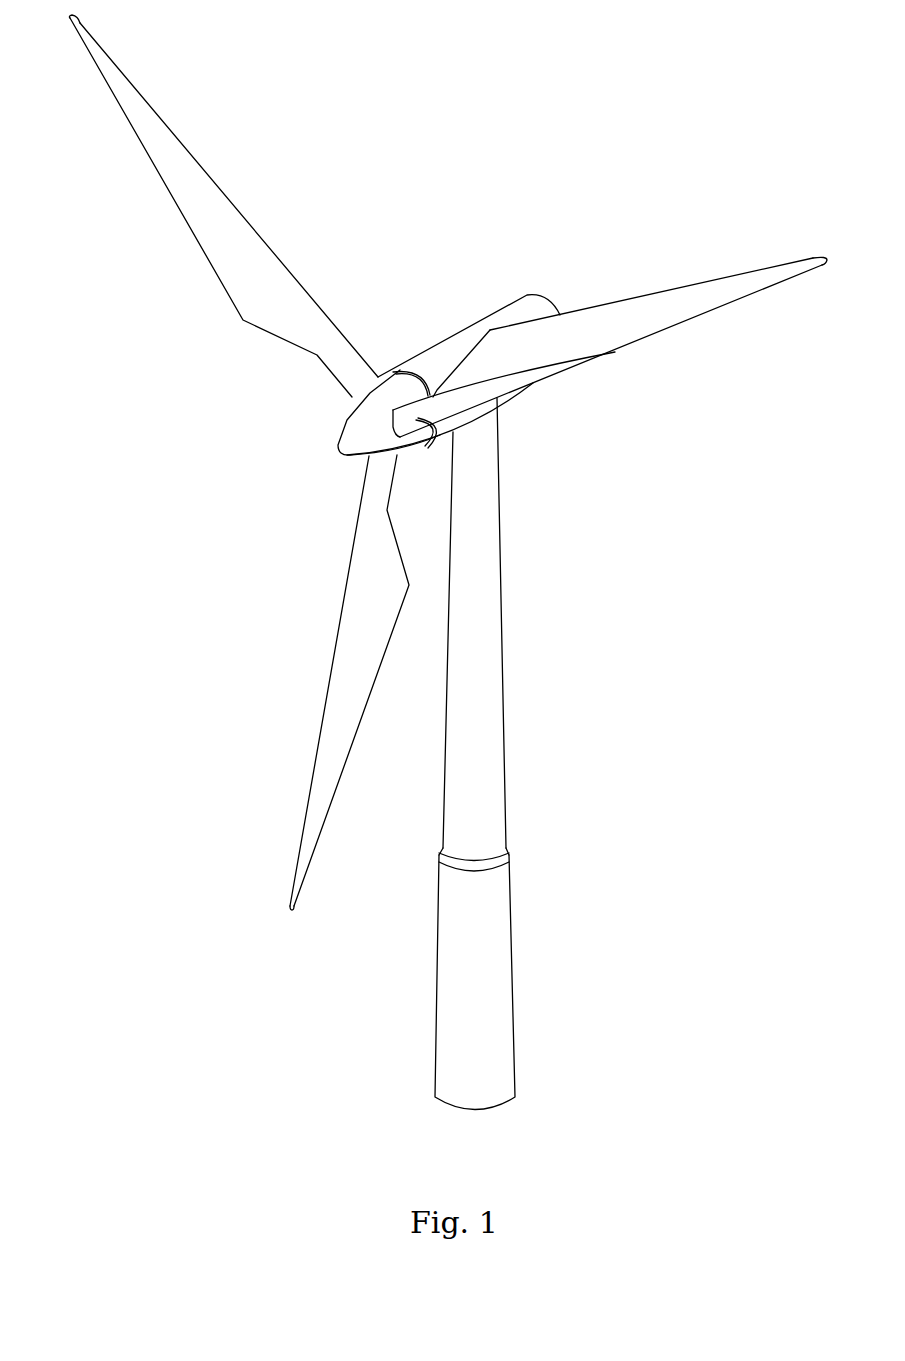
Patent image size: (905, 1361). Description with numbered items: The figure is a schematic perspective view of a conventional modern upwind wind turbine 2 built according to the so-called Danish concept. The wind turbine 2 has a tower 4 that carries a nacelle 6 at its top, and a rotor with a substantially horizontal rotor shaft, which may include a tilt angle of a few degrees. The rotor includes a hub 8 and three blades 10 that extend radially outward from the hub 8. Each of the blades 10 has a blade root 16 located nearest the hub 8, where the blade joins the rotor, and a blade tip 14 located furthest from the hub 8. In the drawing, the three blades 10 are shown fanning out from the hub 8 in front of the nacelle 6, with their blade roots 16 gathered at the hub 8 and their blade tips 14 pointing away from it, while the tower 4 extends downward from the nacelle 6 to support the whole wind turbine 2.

The wind turbine 2 is at (588, 702).
The tower 4 is at (493, 630).
The nacelle 6 is at (440, 353).
The hub 8 is at (355, 433).
The blades 10 is at (253, 295).
The blade tip 14 is at (110, 71).
The blade root 16 is at (366, 391).